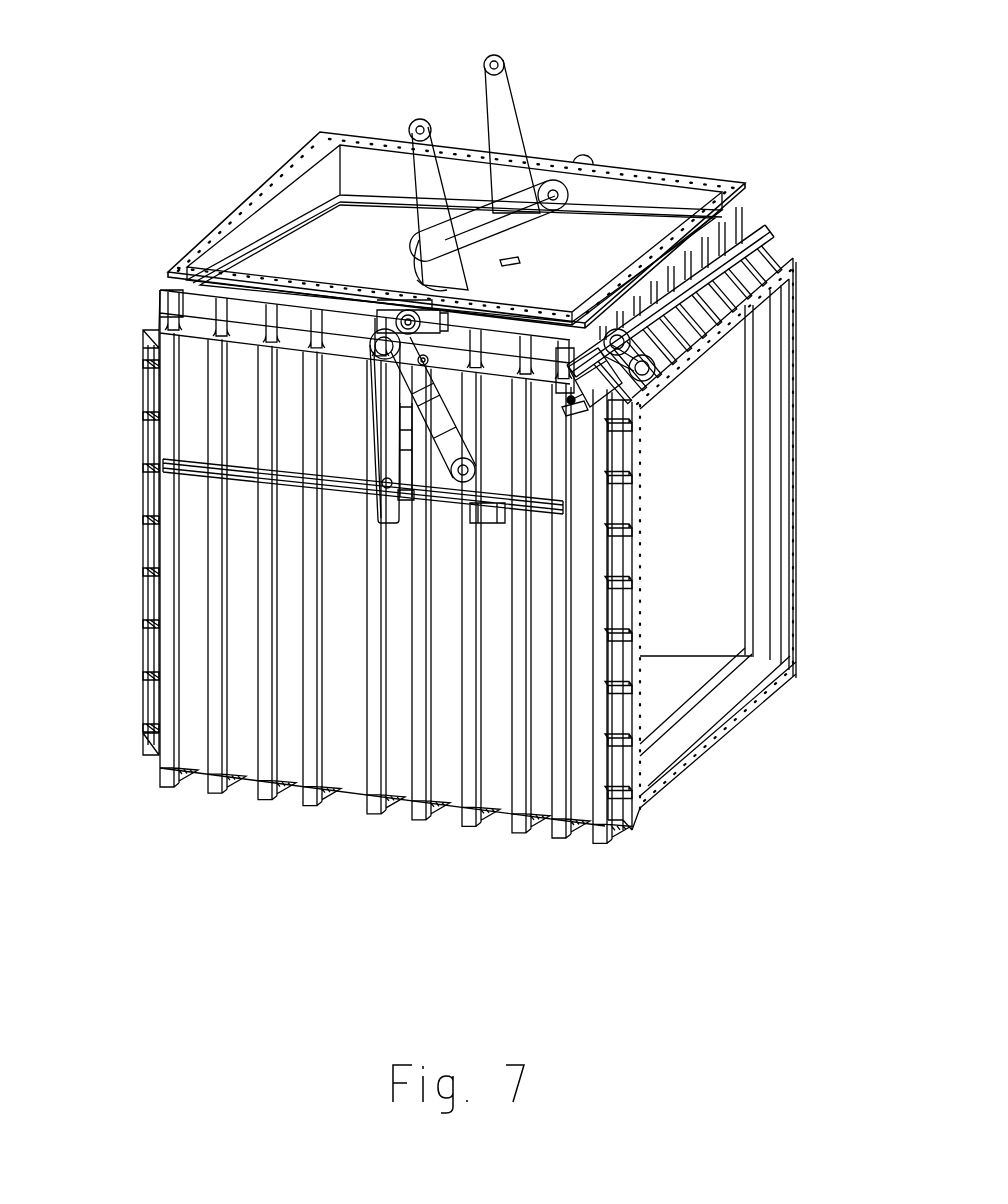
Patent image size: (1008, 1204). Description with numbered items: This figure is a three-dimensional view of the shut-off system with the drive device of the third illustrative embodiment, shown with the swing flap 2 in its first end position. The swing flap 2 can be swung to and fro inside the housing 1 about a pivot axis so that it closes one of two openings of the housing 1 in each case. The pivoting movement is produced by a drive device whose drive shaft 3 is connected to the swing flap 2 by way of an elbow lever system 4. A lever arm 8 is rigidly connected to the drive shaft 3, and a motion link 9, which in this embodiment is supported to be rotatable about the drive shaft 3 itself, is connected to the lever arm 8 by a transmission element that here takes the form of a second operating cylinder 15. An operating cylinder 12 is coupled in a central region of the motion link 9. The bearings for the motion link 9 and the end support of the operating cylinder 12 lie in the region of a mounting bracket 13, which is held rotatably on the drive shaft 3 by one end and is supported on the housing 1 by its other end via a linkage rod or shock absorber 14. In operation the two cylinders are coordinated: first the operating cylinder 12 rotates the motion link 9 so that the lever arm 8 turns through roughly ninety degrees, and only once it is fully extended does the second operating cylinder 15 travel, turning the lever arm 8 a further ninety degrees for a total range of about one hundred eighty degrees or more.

The housing 1 is at (322, 133).
The swing flap 2 is at (328, 253).
The drive shaft 3 is at (490, 240).
The elbow lever system 4 is at (500, 118).
The lever arm 8 is at (450, 308).
The motion link 9 is at (833, 491).
The operating cylinder 12 is at (640, 486).
The mounting bracket 13 is at (222, 426).
The linkage rod or shock absorber 14 is at (363, 687).
The second operating cylinder 15 is at (723, 421).